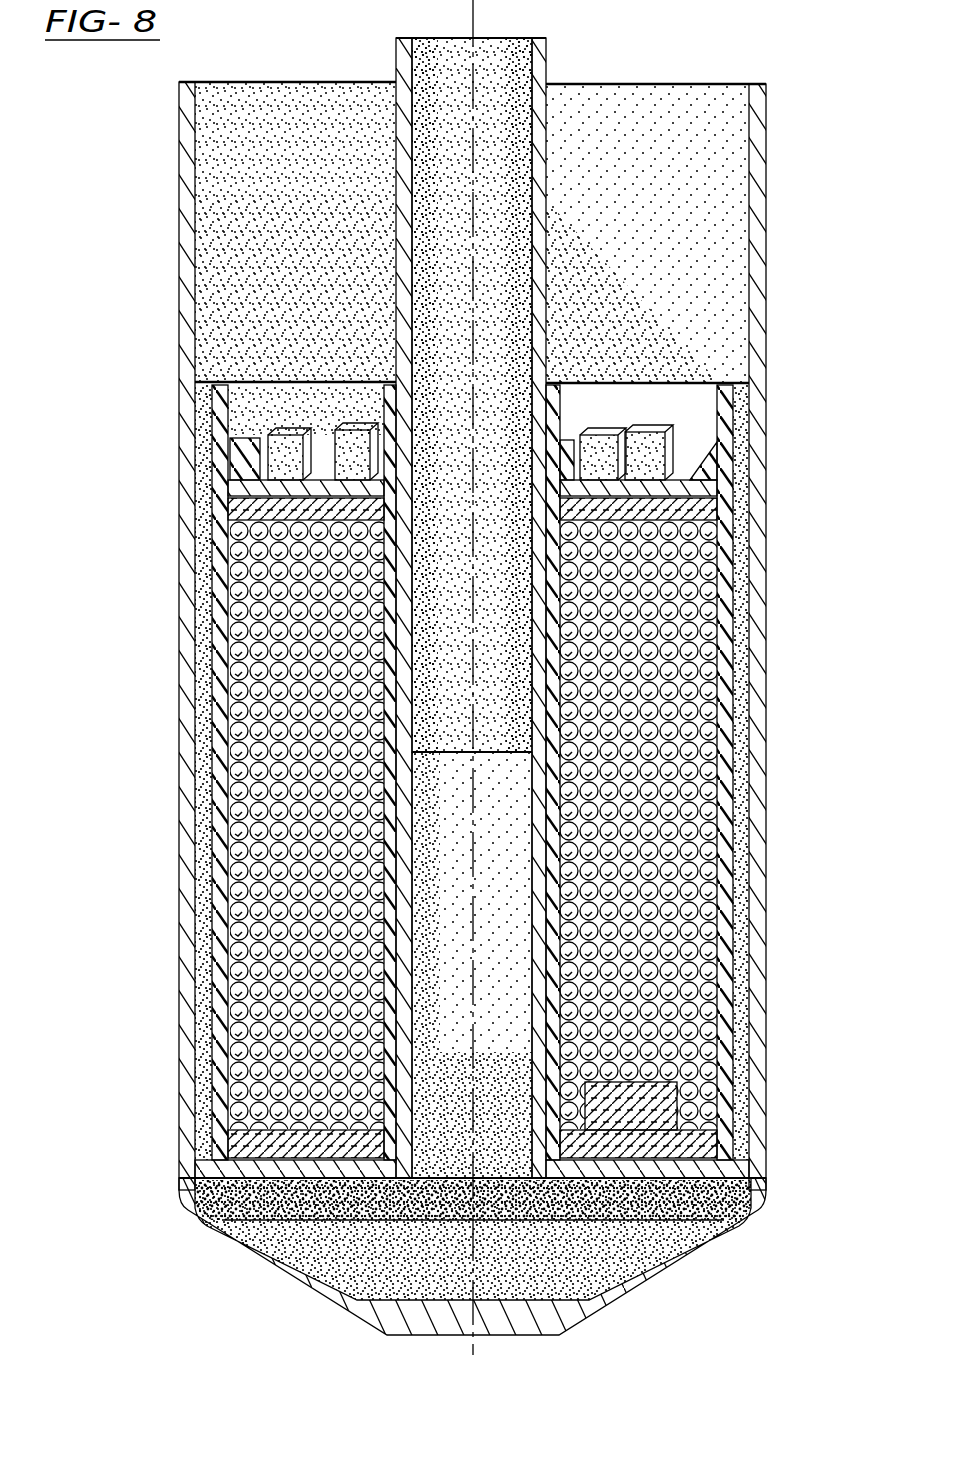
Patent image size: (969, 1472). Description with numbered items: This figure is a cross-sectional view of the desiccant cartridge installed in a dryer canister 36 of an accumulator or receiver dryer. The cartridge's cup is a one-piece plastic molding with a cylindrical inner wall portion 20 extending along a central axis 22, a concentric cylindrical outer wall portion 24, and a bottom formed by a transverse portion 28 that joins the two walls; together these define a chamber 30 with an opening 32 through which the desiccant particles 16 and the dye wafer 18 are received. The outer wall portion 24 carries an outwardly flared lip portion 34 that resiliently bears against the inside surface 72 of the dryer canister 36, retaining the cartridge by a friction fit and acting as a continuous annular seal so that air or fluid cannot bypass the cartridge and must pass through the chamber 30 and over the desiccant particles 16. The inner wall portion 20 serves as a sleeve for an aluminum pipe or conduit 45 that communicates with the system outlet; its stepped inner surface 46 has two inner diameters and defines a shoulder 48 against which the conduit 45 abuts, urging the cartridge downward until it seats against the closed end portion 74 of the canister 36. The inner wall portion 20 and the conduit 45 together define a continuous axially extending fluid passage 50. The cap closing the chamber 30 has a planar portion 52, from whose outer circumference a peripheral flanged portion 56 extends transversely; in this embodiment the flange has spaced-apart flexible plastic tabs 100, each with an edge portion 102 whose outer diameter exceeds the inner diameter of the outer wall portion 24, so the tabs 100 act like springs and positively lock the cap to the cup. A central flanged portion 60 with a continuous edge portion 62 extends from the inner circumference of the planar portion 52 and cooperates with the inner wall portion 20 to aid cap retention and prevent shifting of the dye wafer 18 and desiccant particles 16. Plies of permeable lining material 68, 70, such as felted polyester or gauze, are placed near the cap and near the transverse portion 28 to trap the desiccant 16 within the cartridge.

The central axis 22 is at (480, 18).
The aluminum pipe or conduit 45 is at (546, 60).
The inside surface 72 is at (749, 115).
The dryer canister 36 is at (770, 184).
The opening 32 is at (299, 380).
The inner wall portion 20 is at (377, 383).
The chamber 30 is at (592, 415).
The tabs 100 is at (702, 433).
The edge portion 102 is at (228, 431).
The peripheral flanged portion 56 is at (240, 470).
The planar portion 52 is at (230, 512).
The continuous edge portion 62 is at (548, 448).
The central flanged portion 60 is at (442, 480).
The permeable lining material 68 is at (728, 512).
The desiccant particles 16 is at (226, 771).
The outer wall portion 24 is at (728, 797).
The shoulder 48 is at (533, 760).
The stepped inner surface 46 is at (432, 860).
The fluid passage 50 is at (525, 933).
The dye wafer 18 is at (680, 1097).
The permeable lining material 70 is at (720, 1140).
The transverse portion 28 is at (215, 1190).
The flared lip portion 34 is at (758, 1205).
The closed end portion 74 is at (452, 1295).